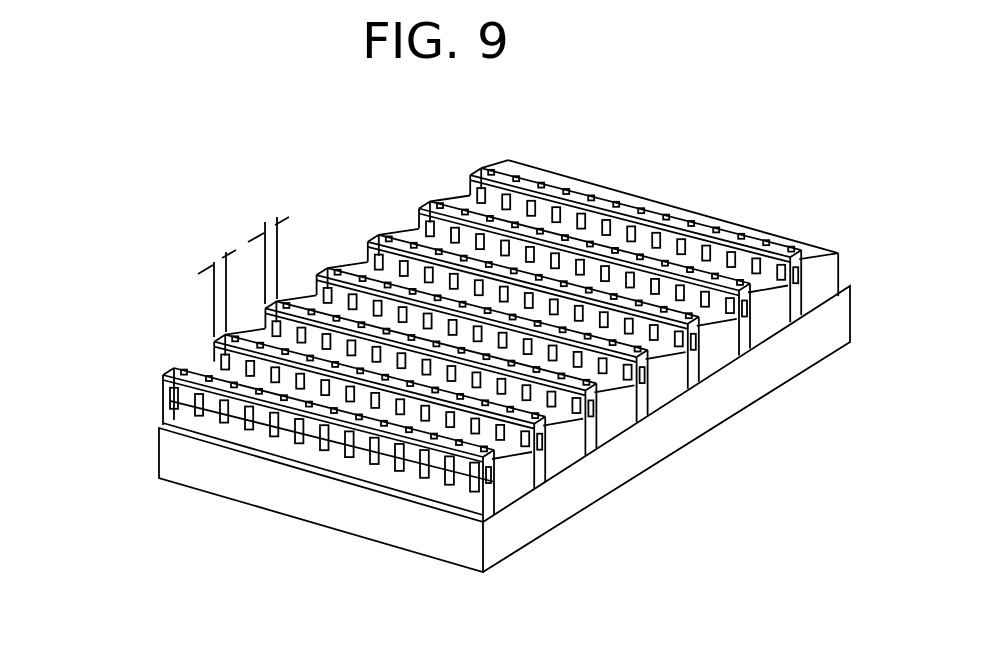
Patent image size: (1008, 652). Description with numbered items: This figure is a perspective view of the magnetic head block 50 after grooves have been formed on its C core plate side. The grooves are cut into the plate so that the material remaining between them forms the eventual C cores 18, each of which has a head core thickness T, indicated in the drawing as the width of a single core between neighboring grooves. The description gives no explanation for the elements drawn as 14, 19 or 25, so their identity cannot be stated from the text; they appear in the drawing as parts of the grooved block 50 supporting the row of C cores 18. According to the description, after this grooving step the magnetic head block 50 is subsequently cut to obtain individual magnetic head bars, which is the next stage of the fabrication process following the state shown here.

The terminal receiving slot 14 is at (577, 430).
The C core 18 is at (769, 257).
The spacer block 19 is at (808, 304).
The base 25 is at (724, 418).
The magnetic head block 50 is at (509, 330).
The head core thickness T is at (243, 265).